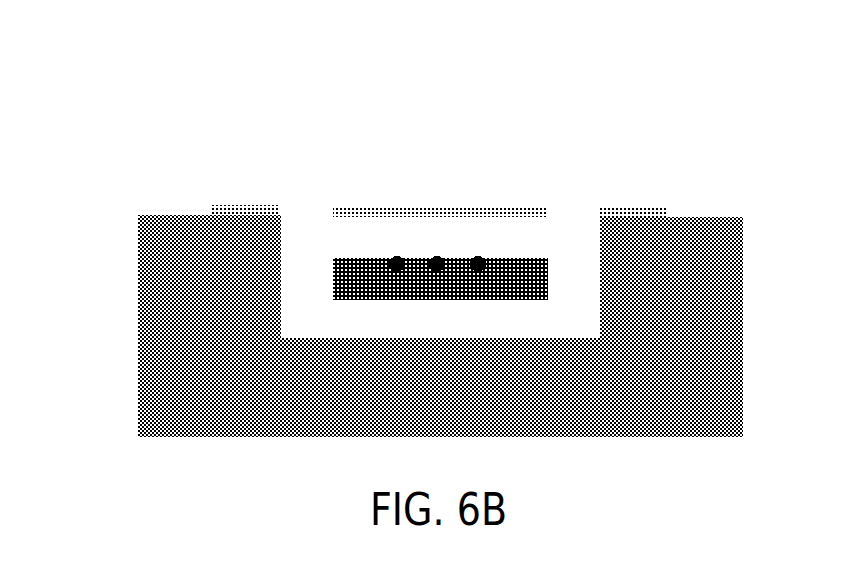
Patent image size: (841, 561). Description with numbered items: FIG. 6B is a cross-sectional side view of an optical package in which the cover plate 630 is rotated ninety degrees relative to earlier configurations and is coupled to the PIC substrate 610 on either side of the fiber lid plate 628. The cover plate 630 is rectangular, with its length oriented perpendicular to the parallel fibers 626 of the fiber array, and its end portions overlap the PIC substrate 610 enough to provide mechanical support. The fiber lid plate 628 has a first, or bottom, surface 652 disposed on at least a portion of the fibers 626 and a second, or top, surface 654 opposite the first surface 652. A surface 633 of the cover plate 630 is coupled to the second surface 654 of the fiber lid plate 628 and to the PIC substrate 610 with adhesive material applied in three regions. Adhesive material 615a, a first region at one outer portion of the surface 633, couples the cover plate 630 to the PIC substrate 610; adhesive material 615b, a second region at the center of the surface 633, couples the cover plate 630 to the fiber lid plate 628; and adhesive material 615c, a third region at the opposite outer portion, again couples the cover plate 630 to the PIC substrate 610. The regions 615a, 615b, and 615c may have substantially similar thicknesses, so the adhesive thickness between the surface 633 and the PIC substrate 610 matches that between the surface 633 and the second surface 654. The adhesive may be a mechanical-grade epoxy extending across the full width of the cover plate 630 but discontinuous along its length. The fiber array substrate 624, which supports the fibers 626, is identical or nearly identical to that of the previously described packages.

The PIC substrate 610 is at (180, 320).
The first region of adhesive material 615a is at (255, 212).
The second region of adhesive material 615b is at (443, 210).
The third region of adhesive material 615c is at (638, 212).
The fiber array substrate 624 is at (387, 285).
The fibers 626 is at (475, 257).
The fiber lid plate 628 is at (481, 256).
The cover plate 630 is at (547, 198).
The surface of the cover plate 633 is at (453, 210).
The first surface of the fiber lid plate 652 is at (502, 258).
The second surface of the fiber lid plate 654 is at (517, 218).